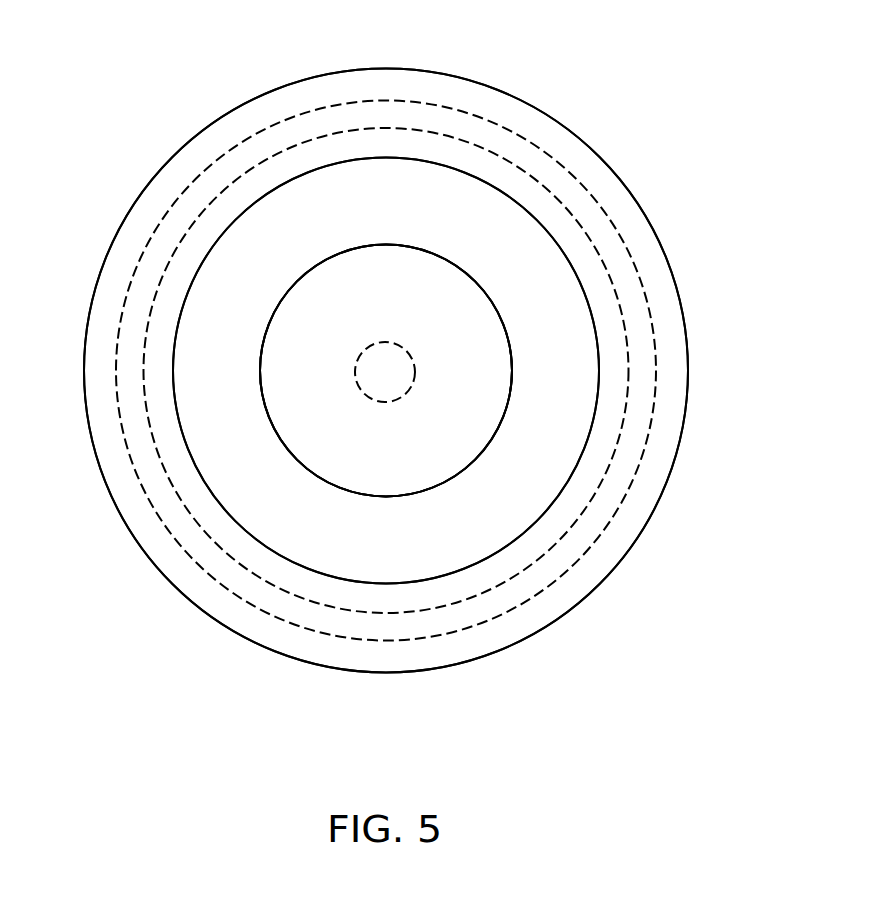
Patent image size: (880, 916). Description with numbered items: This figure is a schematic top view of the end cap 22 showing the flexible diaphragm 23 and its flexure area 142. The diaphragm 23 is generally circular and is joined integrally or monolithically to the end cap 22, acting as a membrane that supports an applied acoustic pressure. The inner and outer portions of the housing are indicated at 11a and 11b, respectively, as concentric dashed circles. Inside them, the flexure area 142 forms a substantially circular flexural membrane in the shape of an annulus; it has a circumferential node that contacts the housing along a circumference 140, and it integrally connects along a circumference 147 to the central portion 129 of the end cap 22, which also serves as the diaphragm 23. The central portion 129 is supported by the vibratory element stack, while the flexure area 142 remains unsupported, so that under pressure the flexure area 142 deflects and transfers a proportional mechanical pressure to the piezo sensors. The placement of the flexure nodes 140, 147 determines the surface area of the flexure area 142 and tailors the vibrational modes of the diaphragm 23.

The inner portion of the housing 11a is at (300, 142).
The outer portion of the housing 11b is at (375, 100).
The end cap 22 is at (537, 108).
The diaphragm 23 is at (118, 514).
The central portion 129 is at (445, 288).
The circumference 140 is at (598, 353).
The flexure area 142 is at (352, 536).
The circumference 147 is at (495, 308).